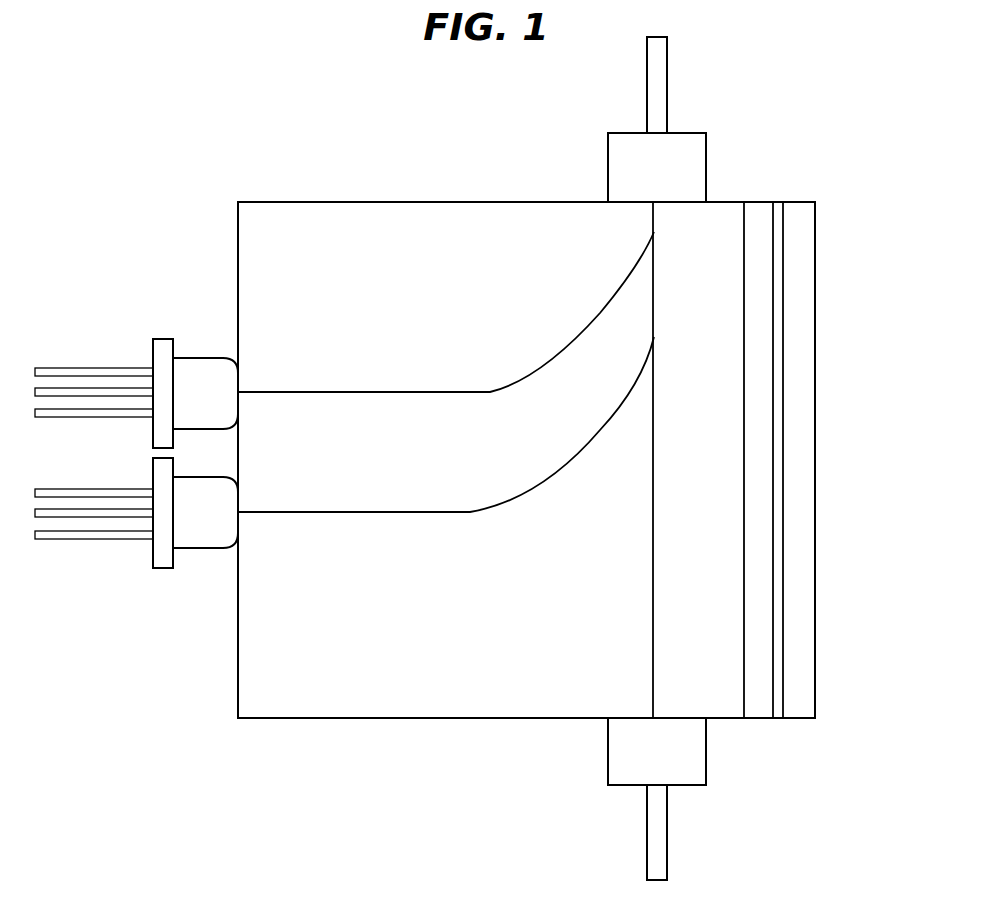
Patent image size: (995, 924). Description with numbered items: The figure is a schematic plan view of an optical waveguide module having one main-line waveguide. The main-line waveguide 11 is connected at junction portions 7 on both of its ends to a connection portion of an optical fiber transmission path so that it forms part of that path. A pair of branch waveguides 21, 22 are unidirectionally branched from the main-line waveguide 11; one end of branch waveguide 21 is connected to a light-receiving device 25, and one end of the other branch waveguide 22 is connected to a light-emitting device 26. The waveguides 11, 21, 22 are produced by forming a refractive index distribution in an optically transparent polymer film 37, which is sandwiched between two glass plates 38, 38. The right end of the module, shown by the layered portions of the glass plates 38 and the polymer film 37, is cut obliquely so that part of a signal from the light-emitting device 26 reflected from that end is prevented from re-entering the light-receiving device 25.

The junction portion 7 is at (667, 62).
The main-line waveguide 11 is at (654, 500).
The branch waveguide 21 is at (501, 388).
The branch waveguide 22 is at (412, 512).
The light-receiving device 25 is at (160, 353).
The light-emitting device 26 is at (162, 555).
The optically transparent polymer film 37 is at (780, 428).
The glass plate 38 is at (756, 210).